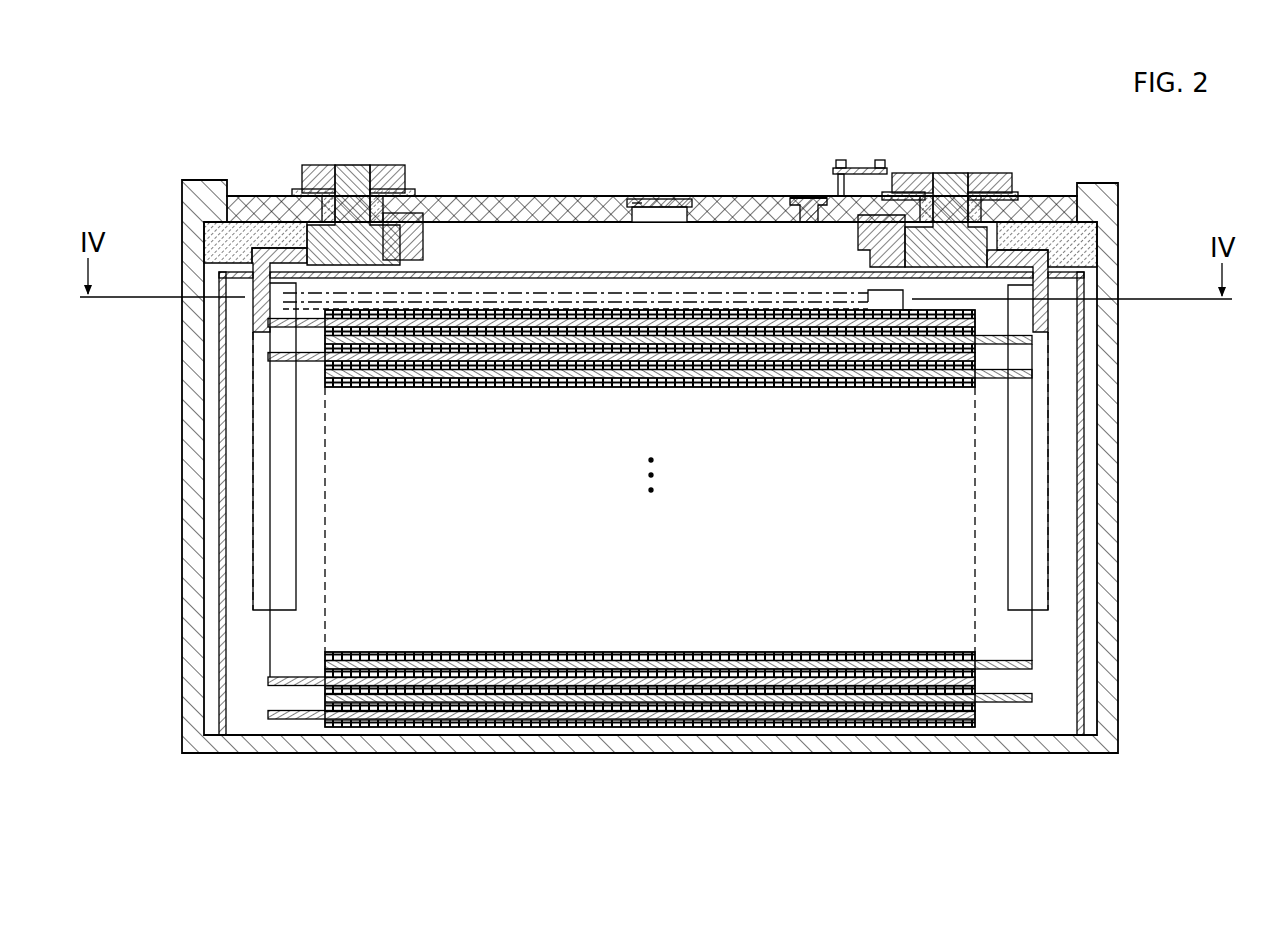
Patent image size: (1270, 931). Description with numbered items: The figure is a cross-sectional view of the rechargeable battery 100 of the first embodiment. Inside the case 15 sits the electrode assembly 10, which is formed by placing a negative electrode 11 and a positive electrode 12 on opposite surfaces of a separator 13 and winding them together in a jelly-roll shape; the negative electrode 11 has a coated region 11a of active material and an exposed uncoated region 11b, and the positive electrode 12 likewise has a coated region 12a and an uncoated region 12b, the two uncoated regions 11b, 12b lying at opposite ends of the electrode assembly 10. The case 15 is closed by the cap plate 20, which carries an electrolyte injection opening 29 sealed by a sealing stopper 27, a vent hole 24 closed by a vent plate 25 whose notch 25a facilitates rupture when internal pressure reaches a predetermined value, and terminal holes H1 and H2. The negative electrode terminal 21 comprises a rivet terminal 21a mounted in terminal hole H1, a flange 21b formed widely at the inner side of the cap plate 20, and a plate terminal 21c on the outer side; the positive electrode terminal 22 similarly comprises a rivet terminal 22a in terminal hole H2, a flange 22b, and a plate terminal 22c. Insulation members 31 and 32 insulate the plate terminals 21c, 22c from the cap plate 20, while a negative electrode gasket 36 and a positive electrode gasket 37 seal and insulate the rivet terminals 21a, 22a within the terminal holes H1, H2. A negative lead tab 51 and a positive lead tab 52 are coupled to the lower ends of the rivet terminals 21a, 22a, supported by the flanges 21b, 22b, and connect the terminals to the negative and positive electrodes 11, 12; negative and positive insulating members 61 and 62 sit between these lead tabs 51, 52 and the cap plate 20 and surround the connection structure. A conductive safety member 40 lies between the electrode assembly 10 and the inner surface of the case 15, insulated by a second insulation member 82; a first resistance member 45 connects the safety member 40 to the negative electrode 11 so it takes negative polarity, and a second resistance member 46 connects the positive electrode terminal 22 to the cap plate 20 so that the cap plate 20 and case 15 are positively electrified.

The rechargeable battery 100 is at (680, 84).
The electrode assembly 10 is at (655, 582).
The negative electrode 11 is at (621, 587).
The coated region 11a is at (410, 686).
The uncoated region 11b is at (430, 812).
The positive electrode 12 is at (684, 595).
The coated region 12a is at (895, 670).
The uncoated region 12b is at (880, 812).
The separator 13 is at (590, 692).
The case 15 is at (1110, 441).
The cap plate 20 is at (735, 207).
The negative electrode terminal 21 is at (356, 162).
The rivet terminal 21a is at (358, 300).
The flange 21b is at (412, 214).
The plate terminal 21c is at (390, 166).
The positive electrode terminal 22 is at (952, 170).
The rivet terminal 22a is at (1000, 283).
The flange 22b is at (885, 235).
The plate terminal 22c is at (1000, 175).
The vent hole 24 is at (660, 212).
The vent plate 25 is at (682, 199).
The notch 25a is at (636, 199).
The sealing stopper 27 is at (812, 200).
The electrolyte injection opening 29 is at (795, 197).
The insulation member 31 is at (303, 186).
The insulation member 32 is at (1020, 196).
The negative electrode gasket 36 is at (298, 192).
The positive electrode gasket 37 is at (912, 192).
The safety member 40 is at (933, 312).
The first resistance member 45 is at (765, 300).
The second resistance member 46 is at (858, 167).
The negative lead tab 51 is at (250, 460).
The positive lead tab 52 is at (1052, 525).
The negative insulating member 61 is at (232, 242).
The positive insulating member 62 is at (1082, 244).
The second insulation member 82 is at (1086, 382).
The terminal hole H1 is at (330, 210).
The terminal hole H2 is at (975, 205).